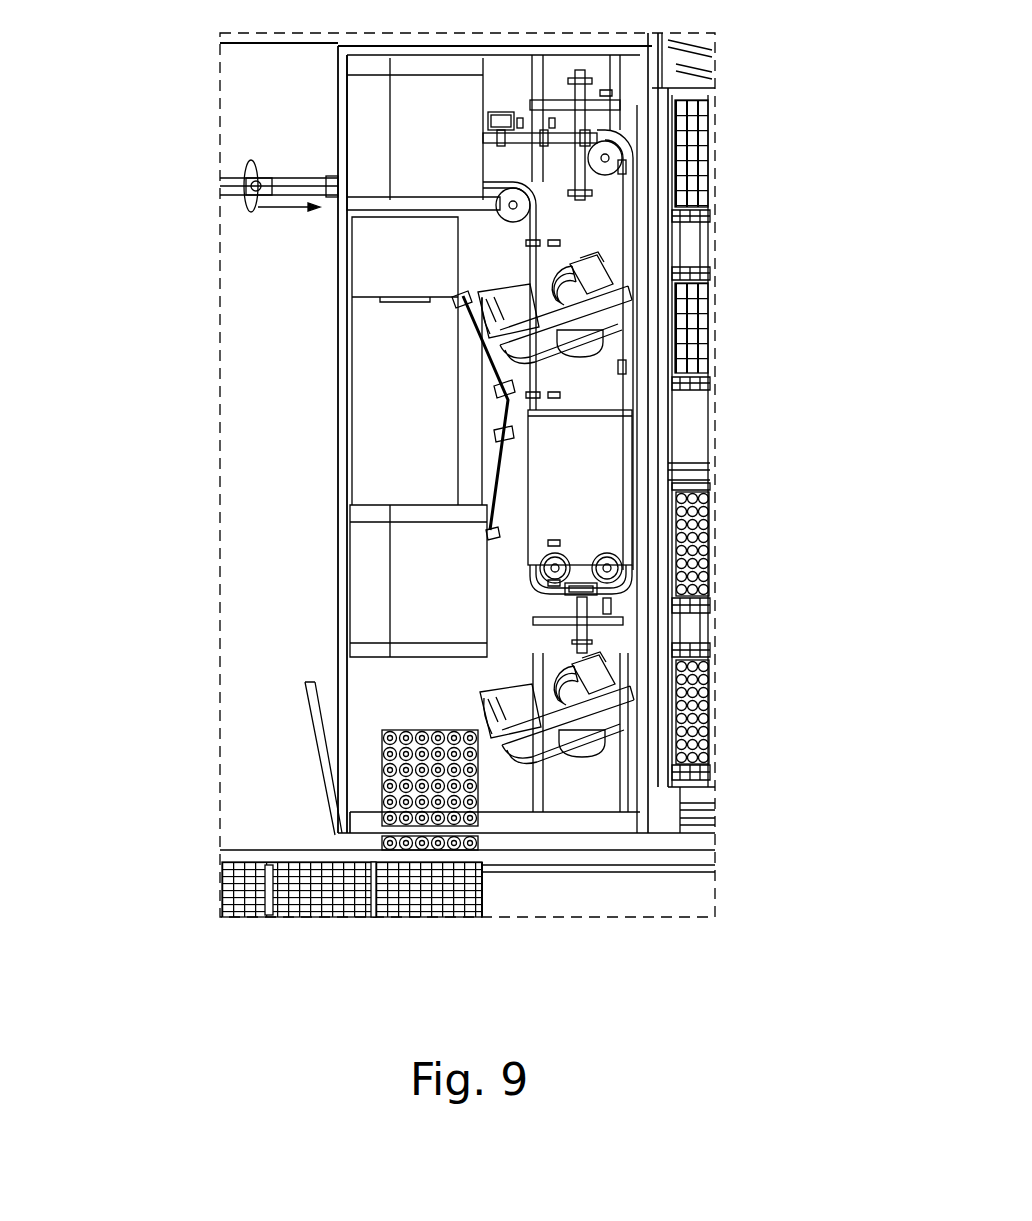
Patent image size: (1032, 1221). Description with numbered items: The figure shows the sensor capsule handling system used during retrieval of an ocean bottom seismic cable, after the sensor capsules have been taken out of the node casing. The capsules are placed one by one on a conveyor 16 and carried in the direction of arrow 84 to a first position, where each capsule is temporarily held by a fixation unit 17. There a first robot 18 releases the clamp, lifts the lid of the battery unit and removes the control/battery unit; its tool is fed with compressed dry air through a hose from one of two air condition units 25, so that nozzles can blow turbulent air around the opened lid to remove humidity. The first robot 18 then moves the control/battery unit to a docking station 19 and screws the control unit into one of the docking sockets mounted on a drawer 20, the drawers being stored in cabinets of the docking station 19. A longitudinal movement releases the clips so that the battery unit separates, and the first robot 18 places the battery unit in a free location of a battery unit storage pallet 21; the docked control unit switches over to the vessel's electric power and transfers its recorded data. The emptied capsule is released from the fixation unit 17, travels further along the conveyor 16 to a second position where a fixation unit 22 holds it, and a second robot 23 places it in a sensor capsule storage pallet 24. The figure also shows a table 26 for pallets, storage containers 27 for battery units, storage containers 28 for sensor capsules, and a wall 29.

The conveyor 16 is at (290, 166).
The arrow 84 is at (272, 208).
The air condition units 25 is at (424, 161).
The second robot 23 is at (551, 312).
The wall 29 is at (335, 518).
The fixation unit 17 is at (558, 619).
The drawer 20 is at (376, 772).
The docking station 19 is at (472, 921).
The first robot 18 is at (596, 708).
The fixation unit 22 is at (612, 128).
The sensor capsule storage pallet 24 is at (712, 131).
The storage containers for sensor capsules 28 is at (717, 213).
The table for pallets 26 is at (604, 443).
The battery unit storage pallet 21 is at (724, 512).
The storage containers for battery units 27 is at (722, 607).